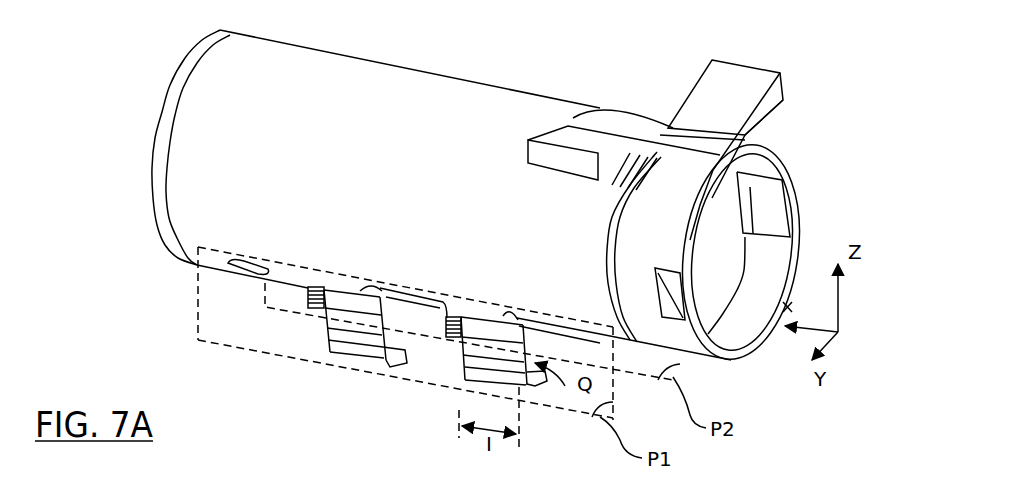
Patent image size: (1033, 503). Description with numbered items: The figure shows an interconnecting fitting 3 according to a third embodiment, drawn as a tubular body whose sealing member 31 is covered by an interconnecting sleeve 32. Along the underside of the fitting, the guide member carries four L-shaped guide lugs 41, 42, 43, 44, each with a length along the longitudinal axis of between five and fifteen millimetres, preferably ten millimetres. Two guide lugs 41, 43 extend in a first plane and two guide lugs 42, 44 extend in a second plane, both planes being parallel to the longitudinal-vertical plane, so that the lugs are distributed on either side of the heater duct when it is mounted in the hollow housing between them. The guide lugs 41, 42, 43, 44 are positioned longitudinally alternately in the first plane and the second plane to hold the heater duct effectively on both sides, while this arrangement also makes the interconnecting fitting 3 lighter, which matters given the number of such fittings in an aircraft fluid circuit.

The interconnecting fitting 3 is at (802, 147).
The sealing member 31 is at (163, 103).
The interconnecting sleeve 32 is at (181, 185).
The guide lug 41 is at (476, 376).
The guide lug 42 is at (310, 306).
The guide lug 43 is at (345, 348).
The guide lug 44 is at (446, 330).